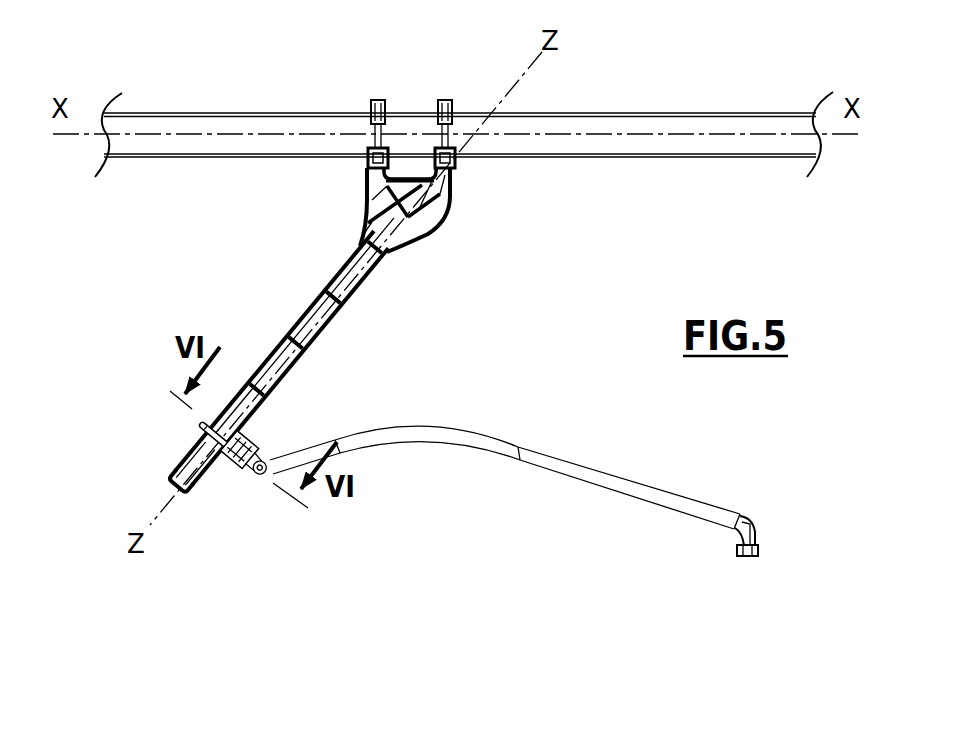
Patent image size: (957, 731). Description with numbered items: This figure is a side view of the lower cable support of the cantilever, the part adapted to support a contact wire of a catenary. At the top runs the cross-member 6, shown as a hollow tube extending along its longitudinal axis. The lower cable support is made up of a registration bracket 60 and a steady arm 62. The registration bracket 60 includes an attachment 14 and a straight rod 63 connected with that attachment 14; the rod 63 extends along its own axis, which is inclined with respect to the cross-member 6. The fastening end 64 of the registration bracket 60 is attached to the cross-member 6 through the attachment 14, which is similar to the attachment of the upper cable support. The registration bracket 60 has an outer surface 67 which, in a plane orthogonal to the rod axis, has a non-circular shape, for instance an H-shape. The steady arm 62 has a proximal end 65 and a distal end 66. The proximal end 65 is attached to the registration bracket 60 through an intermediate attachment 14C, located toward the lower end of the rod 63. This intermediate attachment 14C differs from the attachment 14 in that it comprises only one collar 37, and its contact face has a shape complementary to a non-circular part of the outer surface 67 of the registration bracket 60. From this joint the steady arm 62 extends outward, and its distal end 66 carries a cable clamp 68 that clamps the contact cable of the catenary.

The cross-member 6 is at (690, 163).
The attachment 14 is at (369, 98).
The intermediate attachment 14C is at (183, 391).
The collar 37 is at (217, 437).
The registration bracket 60 is at (266, 400).
The steady arm 62 is at (452, 461).
The straight rod 63 is at (287, 353).
The fastening end 64 is at (361, 217).
The proximal end 65 is at (247, 456).
The distal end 66 is at (750, 560).
The outer surface 67 is at (296, 342).
The cable clamp 68 is at (756, 524).